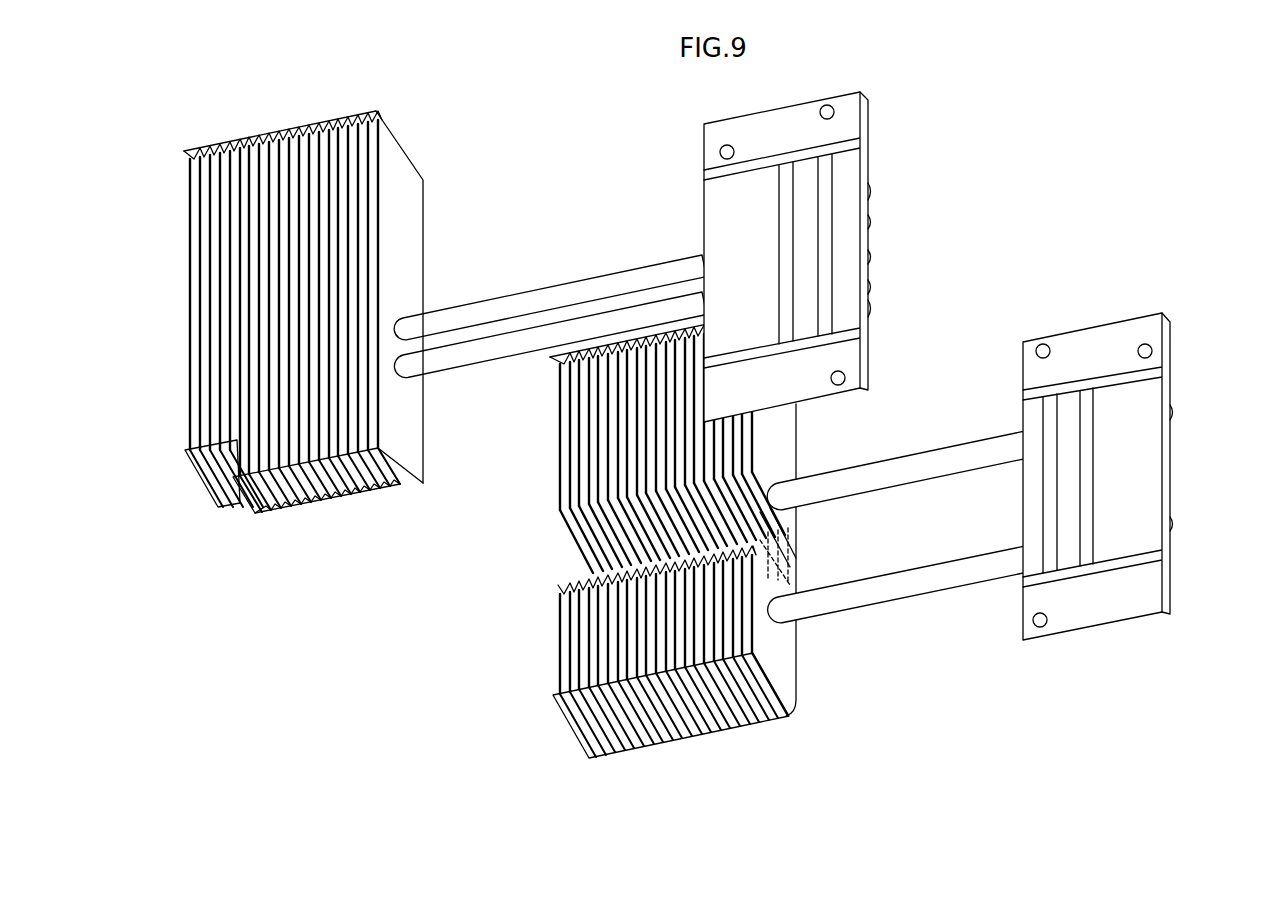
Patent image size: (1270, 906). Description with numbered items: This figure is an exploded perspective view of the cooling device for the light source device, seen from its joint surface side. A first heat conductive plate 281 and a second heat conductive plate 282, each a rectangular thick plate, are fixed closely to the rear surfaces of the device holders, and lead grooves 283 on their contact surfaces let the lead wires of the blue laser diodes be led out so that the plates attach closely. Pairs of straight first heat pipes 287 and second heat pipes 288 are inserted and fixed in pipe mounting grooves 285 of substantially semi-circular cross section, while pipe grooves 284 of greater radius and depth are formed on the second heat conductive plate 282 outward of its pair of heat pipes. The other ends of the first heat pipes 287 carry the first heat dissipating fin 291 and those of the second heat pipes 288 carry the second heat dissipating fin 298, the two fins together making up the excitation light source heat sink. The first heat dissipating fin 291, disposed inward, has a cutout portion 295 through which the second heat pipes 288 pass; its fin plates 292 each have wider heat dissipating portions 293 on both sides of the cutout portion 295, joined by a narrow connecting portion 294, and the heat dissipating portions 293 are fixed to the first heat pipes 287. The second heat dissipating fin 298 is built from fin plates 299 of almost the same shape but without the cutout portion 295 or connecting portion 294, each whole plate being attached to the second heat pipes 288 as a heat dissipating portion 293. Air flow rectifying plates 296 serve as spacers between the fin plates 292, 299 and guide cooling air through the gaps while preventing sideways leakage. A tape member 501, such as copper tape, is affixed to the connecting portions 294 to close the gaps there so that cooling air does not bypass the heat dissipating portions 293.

The first heat conductive plate 281 is at (1110, 597).
The second heat conductive plate 282 is at (852, 130).
The lead grooves 283 is at (823, 273).
The pipe grooves 284 is at (866, 190).
The pipe mounting grooves 285 is at (868, 272).
The first heat pipes 287 is at (903, 467).
The second heat pipes 288 is at (500, 300).
The first heat dissipating fin 291 is at (777, 461).
The fin plates 292 is at (701, 503).
The heat dissipating portions 293 is at (838, 700).
The connecting portion 294 is at (792, 565).
The cutout portion 295 is at (598, 572).
The air flow rectifying plates 296 is at (192, 149).
The second heat dissipating fin 298 is at (482, 438).
The fin plates 299 is at (393, 170).
The tape member 501 is at (755, 540).